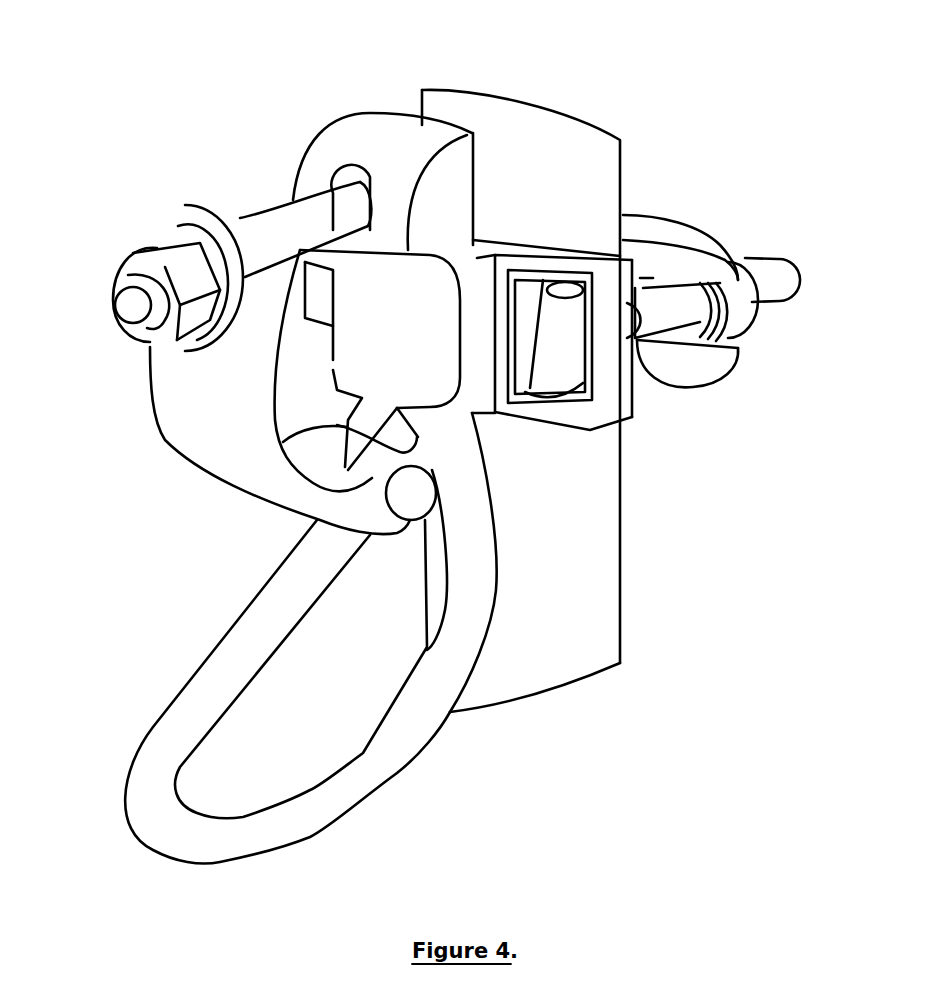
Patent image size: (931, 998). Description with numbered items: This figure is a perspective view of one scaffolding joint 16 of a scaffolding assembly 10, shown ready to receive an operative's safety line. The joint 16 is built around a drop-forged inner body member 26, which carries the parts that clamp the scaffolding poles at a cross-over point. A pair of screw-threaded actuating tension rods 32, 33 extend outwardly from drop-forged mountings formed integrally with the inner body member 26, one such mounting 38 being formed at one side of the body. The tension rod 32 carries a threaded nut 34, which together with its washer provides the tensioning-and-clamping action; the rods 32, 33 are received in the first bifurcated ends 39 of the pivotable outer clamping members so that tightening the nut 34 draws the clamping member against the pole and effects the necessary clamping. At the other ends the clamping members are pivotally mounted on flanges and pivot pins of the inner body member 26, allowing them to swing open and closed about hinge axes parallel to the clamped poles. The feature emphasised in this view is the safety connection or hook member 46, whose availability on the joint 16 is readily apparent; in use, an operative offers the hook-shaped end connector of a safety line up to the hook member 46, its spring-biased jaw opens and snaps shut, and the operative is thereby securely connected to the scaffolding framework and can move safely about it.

The scaffolding assembly 10 is at (615, 718).
The scaffolding joint 16 is at (552, 458).
The inner body member 26 is at (403, 145).
The actuating tension rod 32 is at (298, 225).
The actuating tension rod 33 is at (672, 320).
The threaded nut 34 is at (168, 300).
The drop-forged mounting 38 is at (613, 378).
The first bifurcated end 39 is at (706, 360).
The safety connection or hook member 46 is at (367, 765).